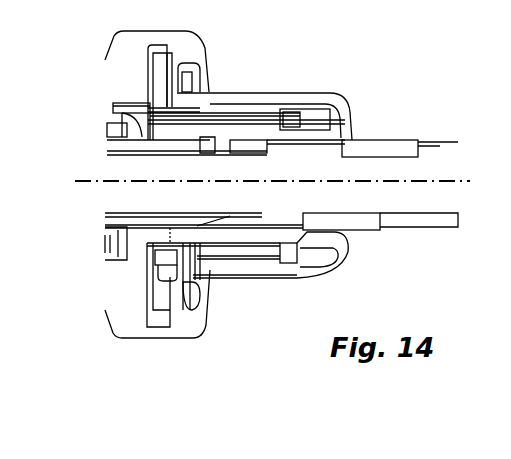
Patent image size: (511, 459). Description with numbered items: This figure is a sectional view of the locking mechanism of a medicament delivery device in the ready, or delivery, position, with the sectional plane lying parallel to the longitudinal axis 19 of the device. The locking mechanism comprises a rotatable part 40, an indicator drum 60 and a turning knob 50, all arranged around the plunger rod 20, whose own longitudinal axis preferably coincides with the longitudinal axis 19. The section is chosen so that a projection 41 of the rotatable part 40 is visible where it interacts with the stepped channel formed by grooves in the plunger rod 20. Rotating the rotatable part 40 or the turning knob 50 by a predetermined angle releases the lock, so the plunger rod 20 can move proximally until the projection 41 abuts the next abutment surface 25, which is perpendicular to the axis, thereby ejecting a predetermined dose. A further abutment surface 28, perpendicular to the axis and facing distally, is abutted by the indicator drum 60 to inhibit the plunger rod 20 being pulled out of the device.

The longitudinal axis 19 is at (85, 184).
The plunger rod 20 is at (376, 174).
The abutment surface 25 is at (268, 152).
The abutment surface 28 is at (200, 147).
The rotatable part 40 is at (258, 135).
The projection 41 is at (213, 146).
The turning knob 50 is at (272, 273).
The indicator drum 60 is at (192, 117).